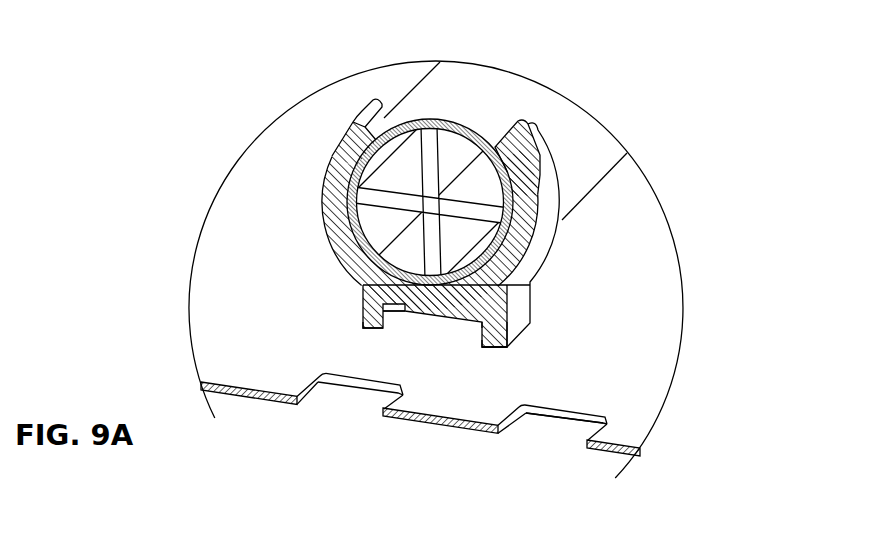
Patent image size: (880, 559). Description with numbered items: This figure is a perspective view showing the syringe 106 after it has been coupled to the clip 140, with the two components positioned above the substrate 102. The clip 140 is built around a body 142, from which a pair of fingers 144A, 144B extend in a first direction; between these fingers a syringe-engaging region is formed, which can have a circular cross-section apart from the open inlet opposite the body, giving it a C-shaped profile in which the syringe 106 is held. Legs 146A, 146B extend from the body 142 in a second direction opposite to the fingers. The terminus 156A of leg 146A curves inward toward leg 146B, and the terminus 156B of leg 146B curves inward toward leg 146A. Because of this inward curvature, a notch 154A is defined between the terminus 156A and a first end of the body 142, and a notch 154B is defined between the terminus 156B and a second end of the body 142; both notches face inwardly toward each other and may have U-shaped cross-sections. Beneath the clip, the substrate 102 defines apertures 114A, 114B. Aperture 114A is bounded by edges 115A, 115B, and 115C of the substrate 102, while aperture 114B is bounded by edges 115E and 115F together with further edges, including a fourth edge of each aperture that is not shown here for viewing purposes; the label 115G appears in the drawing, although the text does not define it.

The substrate 102 is at (652, 350).
The syringe 106 is at (472, 83).
The clip 140 is at (168, 196).
The body 142 is at (294, 142).
The finger 144A is at (357, 110).
The finger 144B is at (525, 138).
The leg 146A is at (363, 290).
The leg 146B is at (505, 307).
The notch 154A is at (409, 319).
The notch 154B is at (478, 321).
The terminus 156A is at (363, 323).
The terminus 156B is at (505, 345).
The aperture 114A is at (312, 419).
The aperture 114B is at (596, 415).
The edge 115A is at (315, 377).
The edge 115B is at (342, 377).
The edge 115C is at (386, 400).
The edge 115E is at (512, 423).
The edge 115F is at (557, 416).
The second step down 115G is at (593, 423).